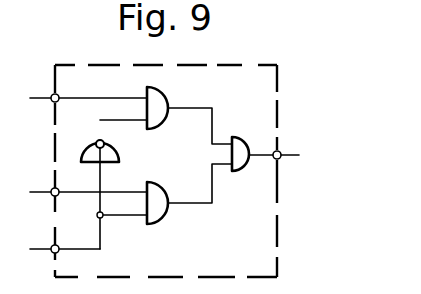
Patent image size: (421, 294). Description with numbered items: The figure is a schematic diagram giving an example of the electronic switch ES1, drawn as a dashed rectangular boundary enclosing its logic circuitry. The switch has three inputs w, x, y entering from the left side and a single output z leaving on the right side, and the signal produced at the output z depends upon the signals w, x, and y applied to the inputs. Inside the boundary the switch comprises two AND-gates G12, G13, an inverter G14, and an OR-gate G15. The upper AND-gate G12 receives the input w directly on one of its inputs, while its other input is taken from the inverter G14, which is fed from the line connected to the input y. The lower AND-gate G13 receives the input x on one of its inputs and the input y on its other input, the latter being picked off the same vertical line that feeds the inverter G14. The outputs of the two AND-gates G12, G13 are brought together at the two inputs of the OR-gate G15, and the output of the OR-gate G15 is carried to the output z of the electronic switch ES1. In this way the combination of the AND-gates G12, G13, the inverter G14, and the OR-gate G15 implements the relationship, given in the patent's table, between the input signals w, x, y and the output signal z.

The electronic switch ES1 is at (279, 108).
The AND-gate G12 is at (160, 92).
The AND-gate G13 is at (165, 213).
The inverter G14 is at (121, 151).
The OR-gate G15 is at (238, 120).
The input w is at (88, 86).
The input x is at (88, 180).
The input y is at (65, 236).
The output z is at (274, 145).